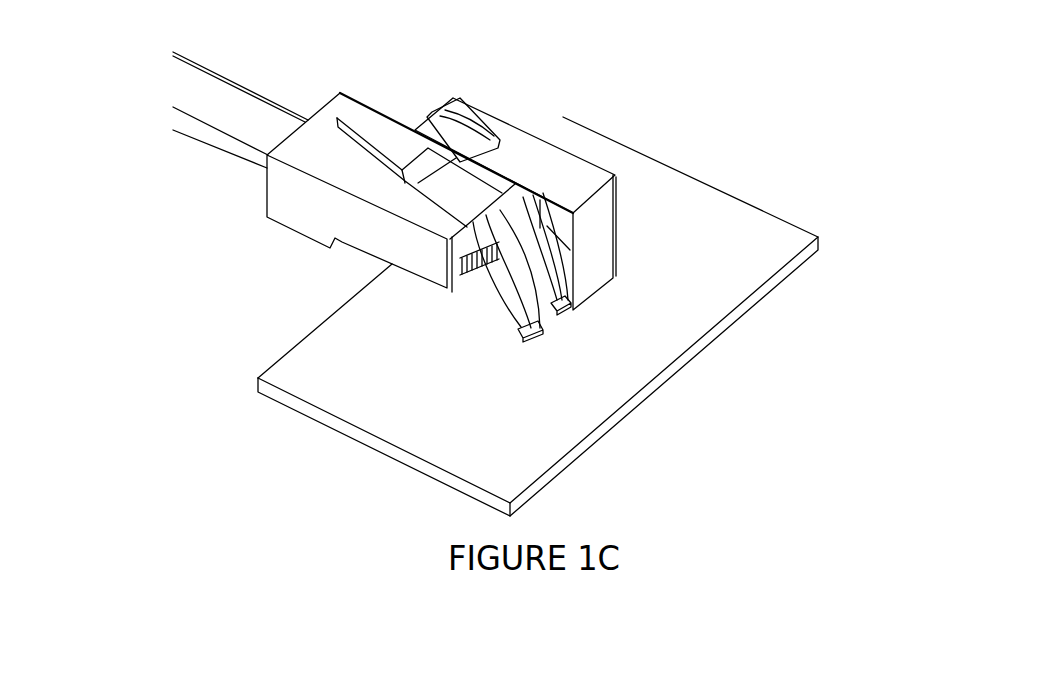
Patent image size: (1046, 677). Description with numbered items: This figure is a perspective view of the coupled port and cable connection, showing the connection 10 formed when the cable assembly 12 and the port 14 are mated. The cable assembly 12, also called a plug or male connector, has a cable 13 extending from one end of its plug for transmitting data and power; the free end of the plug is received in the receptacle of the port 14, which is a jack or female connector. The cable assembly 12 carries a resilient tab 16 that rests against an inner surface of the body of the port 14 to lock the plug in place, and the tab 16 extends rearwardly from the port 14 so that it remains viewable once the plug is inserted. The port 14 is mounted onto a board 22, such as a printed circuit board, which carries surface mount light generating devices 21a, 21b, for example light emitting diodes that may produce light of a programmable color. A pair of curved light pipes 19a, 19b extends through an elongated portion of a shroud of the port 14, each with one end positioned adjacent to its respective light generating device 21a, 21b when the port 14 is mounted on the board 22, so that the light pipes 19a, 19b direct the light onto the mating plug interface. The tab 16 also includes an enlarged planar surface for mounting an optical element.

The connection 10 is at (461, 66).
The cable assembly 12 is at (340, 93).
The cable 13 is at (230, 152).
The port 14 is at (478, 106).
The resilient tab 16 is at (367, 118).
The curved light pipe 19a is at (573, 288).
The curved light pipe 19b is at (506, 286).
The surface mount light generating device 21a is at (558, 310).
The surface mount light generating device 21b is at (519, 330).
The board 22 is at (388, 447).